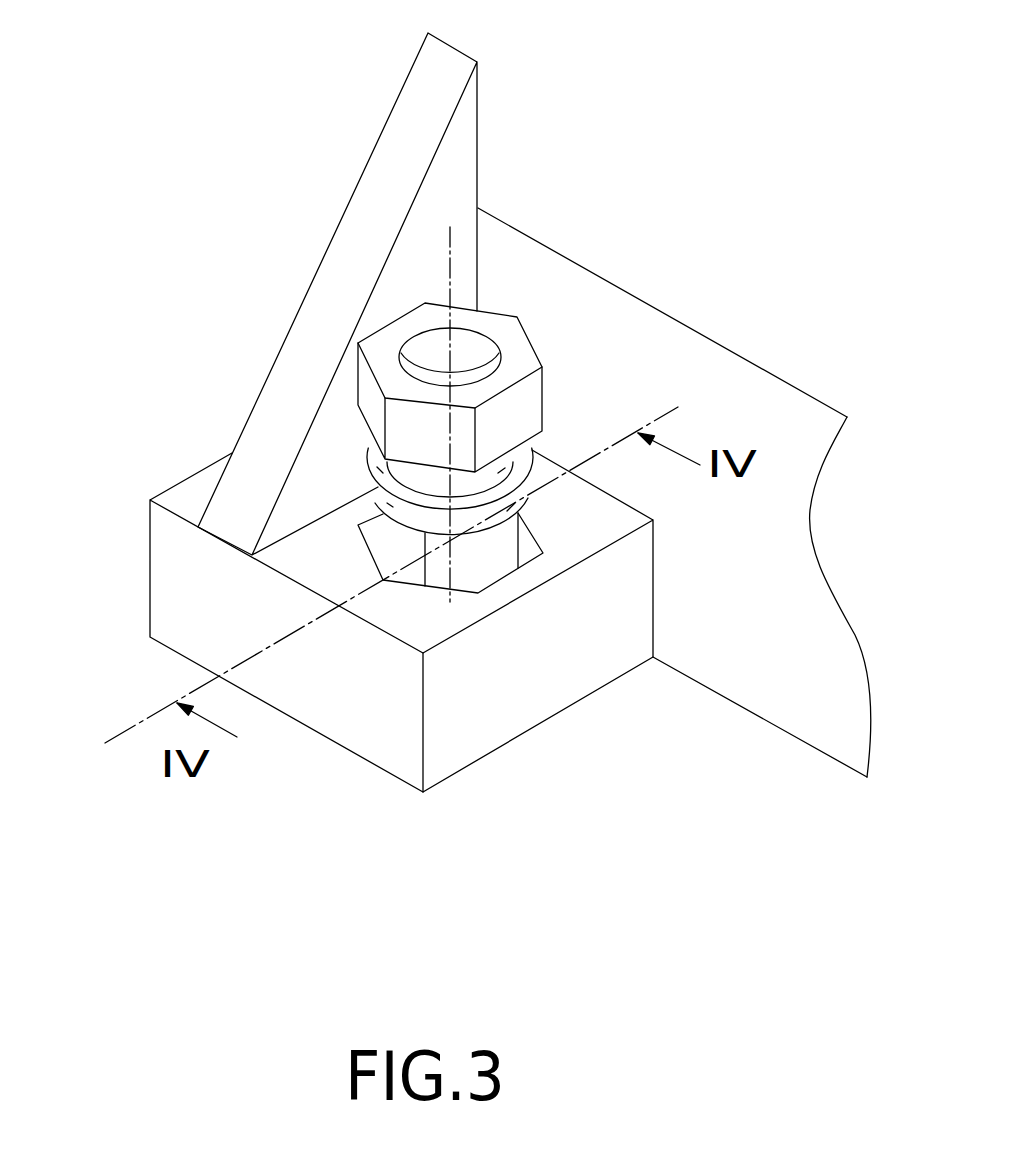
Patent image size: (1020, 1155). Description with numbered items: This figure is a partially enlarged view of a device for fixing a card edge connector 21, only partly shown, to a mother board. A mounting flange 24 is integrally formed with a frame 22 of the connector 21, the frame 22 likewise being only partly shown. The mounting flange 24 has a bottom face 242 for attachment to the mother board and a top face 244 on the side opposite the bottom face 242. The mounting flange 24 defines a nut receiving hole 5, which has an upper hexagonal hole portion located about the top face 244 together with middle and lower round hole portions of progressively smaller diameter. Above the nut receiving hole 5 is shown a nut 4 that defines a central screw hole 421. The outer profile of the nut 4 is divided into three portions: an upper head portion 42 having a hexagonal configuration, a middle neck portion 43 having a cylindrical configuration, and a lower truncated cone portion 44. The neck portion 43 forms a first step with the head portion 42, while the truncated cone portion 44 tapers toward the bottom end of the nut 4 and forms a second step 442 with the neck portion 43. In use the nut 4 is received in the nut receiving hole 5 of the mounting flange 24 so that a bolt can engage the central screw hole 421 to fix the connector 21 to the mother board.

The nut 4 is at (340, 382).
The card edge connector 21 is at (777, 173).
The frame 22 is at (795, 690).
The mounting flange 24 is at (365, 710).
The bottom face 242 is at (407, 785).
The top face 244 is at (418, 625).
The nut receiving hole 5 is at (482, 550).
The head portion 42 is at (527, 417).
The central screw hole 421 is at (482, 342).
The neck portion 43 is at (537, 460).
The truncated cone portion 44 is at (370, 497).
The second step 442 is at (372, 480).